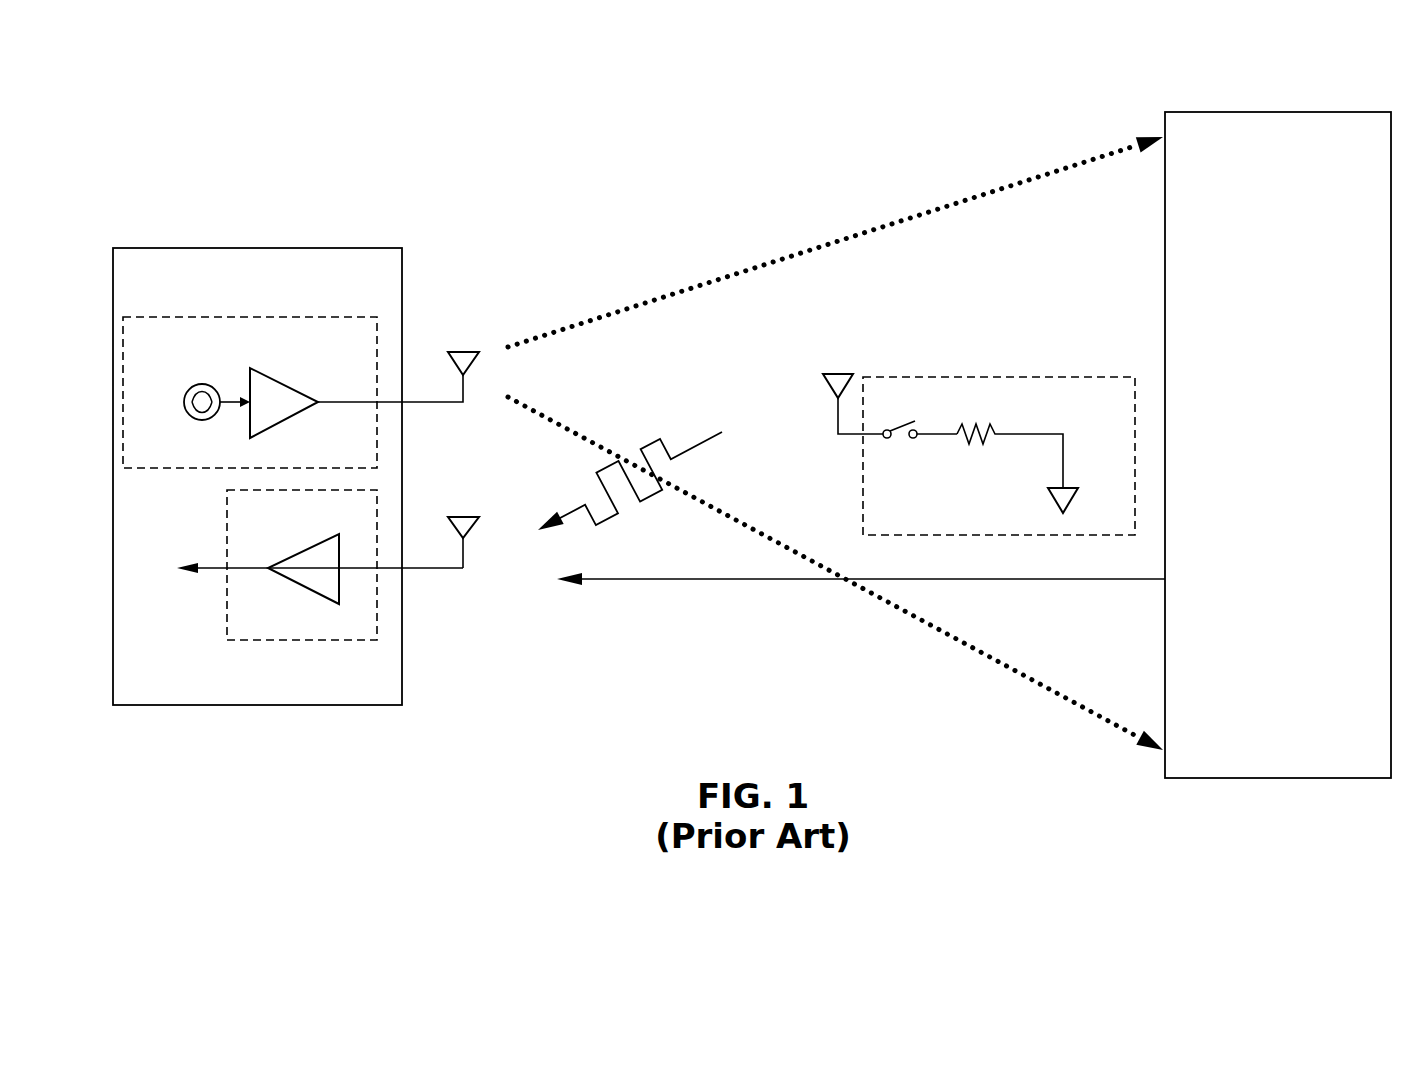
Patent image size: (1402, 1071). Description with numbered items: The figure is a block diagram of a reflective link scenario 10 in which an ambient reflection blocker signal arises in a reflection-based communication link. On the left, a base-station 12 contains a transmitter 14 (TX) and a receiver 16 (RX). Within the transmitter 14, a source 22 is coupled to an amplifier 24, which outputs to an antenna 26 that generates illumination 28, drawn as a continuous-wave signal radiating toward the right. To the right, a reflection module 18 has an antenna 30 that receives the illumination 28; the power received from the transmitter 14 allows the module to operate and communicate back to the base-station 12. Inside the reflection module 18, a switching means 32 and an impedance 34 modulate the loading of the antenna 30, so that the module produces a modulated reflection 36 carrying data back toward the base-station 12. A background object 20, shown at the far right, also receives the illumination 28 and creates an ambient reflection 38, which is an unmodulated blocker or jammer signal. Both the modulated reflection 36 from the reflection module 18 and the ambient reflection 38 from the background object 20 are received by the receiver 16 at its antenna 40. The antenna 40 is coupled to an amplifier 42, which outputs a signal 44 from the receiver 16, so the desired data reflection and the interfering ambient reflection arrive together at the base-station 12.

The reflective link scenario 10 is at (188, 138).
The base-station 12 is at (385, 248).
The transmitter 14 is at (255, 318).
The receiver 16 is at (262, 645).
The reflection module 18 is at (1045, 376).
The background object 20 is at (1288, 112).
The source 22 is at (200, 420).
The amplifier 24 is at (293, 420).
The antenna 26 is at (477, 358).
The illumination 28 is at (680, 284).
The antenna 30 is at (838, 372).
The switching means 32 is at (888, 440).
The impedance 34 is at (978, 440).
The modulated reflection 36 is at (700, 446).
The ambient reflection 38 is at (1040, 580).
The antenna 40 is at (477, 530).
The amplifier 42 is at (322, 595).
The signal 44 is at (207, 572).